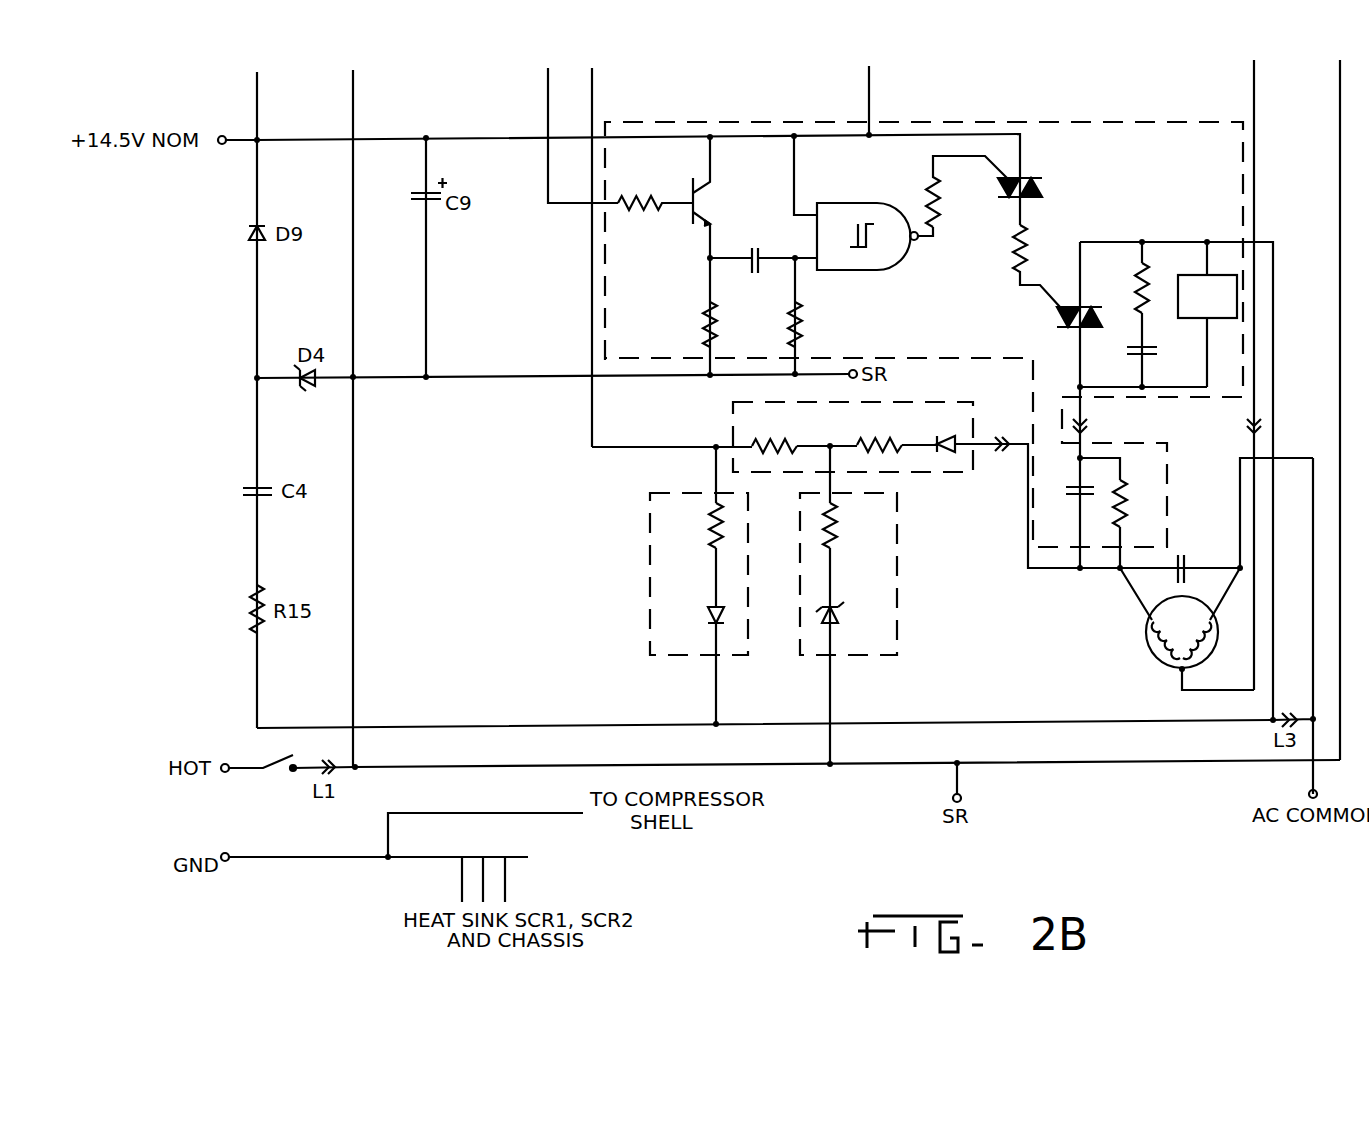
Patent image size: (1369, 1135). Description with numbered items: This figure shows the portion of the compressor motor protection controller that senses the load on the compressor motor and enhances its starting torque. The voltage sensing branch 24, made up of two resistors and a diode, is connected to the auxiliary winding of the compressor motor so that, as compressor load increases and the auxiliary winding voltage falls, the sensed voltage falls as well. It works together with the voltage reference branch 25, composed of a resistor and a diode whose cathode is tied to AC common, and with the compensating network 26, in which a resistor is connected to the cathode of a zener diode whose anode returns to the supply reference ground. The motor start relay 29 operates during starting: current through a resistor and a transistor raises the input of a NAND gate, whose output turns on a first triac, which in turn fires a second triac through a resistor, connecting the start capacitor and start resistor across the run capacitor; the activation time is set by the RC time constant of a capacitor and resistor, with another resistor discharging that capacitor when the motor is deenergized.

The voltage sensing branch 24 is at (733, 433).
The voltage reference branch 25 is at (650, 578).
The compensating network 26 is at (897, 560).
The motor start relay 29 is at (943, 121).